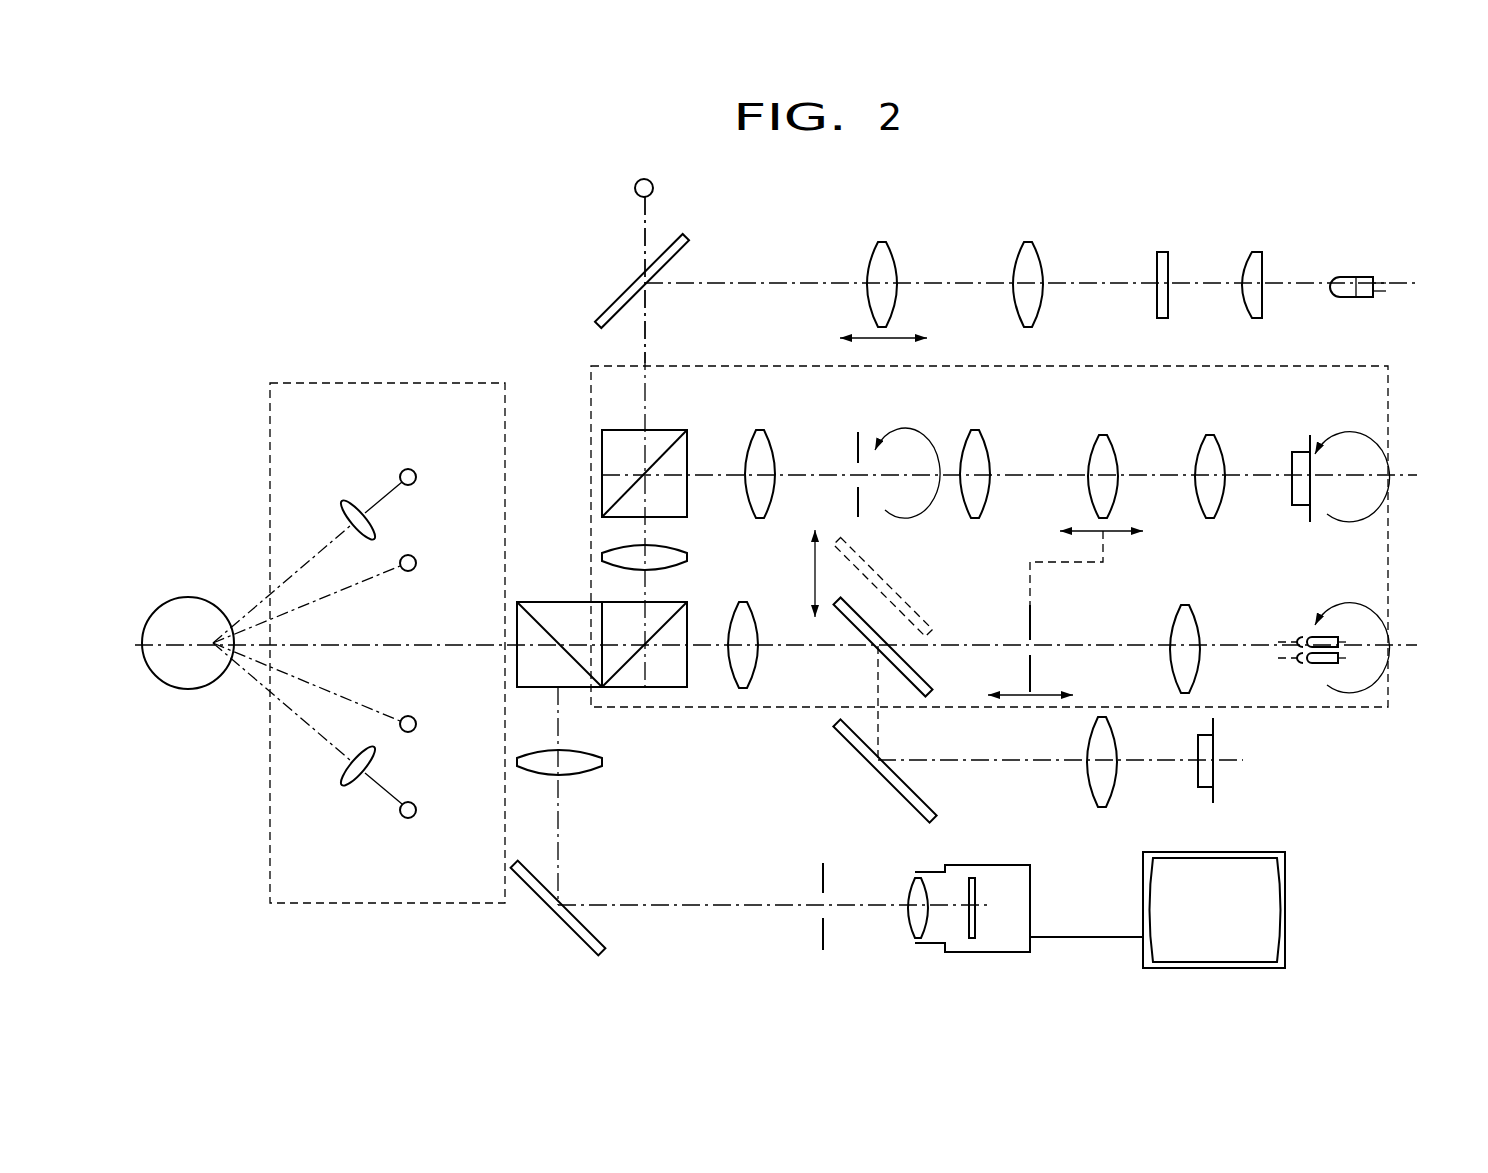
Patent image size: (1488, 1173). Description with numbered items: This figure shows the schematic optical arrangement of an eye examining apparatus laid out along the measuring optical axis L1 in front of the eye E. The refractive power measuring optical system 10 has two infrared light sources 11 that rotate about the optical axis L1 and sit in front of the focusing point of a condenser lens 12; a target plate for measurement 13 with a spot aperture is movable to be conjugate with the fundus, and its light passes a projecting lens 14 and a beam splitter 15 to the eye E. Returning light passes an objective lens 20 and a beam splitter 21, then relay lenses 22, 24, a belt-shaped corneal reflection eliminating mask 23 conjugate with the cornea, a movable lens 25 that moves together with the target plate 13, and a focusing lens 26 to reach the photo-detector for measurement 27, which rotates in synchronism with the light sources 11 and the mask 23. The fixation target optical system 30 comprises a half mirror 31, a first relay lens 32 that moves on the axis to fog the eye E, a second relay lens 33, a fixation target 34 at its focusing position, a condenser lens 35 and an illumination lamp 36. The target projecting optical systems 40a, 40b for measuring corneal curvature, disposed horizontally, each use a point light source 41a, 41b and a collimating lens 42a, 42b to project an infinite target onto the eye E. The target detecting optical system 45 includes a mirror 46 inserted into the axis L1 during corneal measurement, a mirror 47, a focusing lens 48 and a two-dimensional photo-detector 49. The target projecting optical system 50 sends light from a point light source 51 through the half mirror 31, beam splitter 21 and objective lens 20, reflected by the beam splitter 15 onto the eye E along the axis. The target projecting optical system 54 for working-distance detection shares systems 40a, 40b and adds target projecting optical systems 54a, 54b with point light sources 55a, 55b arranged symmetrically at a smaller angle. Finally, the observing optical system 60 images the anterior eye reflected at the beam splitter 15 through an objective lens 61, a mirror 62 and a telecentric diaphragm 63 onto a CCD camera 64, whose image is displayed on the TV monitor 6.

The TV monitor 6 is at (1265, 873).
The refractive power measuring optical system 10 is at (1392, 415).
The light sources for measurement 11 is at (1305, 635).
The condenser lens 12 is at (1187, 630).
The target plate for measurement 13 is at (1033, 620).
The projecting lens 14 is at (743, 615).
The beam splitter 15 is at (580, 615).
The objective lens 20 is at (620, 555).
The beam splitter 21 is at (612, 432).
The relay lens 22 is at (755, 448).
The corneal reflection eliminating mask 23 is at (855, 445).
The relay lens 24 is at (975, 446).
The movable lens 25 is at (1103, 445).
The focusing lens 26 is at (1210, 445).
The photo-detector for measurement 27 is at (1302, 455).
The fixation target optical system 30 is at (1374, 252).
The half mirror 31 is at (608, 297).
The first relay lens 32 is at (882, 250).
The second relay lens 33 is at (1025, 255).
The fixation target 34 is at (1160, 258).
The condenser lens 35 is at (1252, 265).
The illumination lamp 36 is at (1350, 278).
The target projecting optical system for measuring corneal curvature 40a is at (308, 546).
The target projecting optical system for measuring corneal curvature 40b is at (286, 727).
The point light source 41a is at (405, 469).
The point light source 41b is at (405, 822).
The collimating lens 42a is at (350, 505).
The collimating lens 42b is at (342, 780).
The target detecting optical system 45 is at (1247, 749).
The mirror 46 is at (907, 675).
The mirror 47 is at (885, 787).
The focusing lens 48 is at (1090, 770).
The two-dimensional photo-detector 49 is at (1215, 773).
The target projecting optical system 50 is at (603, 240).
The point light source 51 is at (634, 190).
The target projecting optical system 54 is at (383, 383).
The target projecting optical system 54a is at (374, 599).
The target projecting optical system 54b is at (366, 720).
The point light source 55a is at (417, 562).
The point light source 55b is at (417, 726).
The observing optical system 60 is at (660, 915).
The objective lens 61 is at (575, 765).
The mirror 62 is at (540, 896).
The telecentric diaphragm 63 is at (815, 880).
The CCD camera 64 is at (1030, 893).
The eye E is at (183, 612).
The optical axis L1 is at (422, 644).